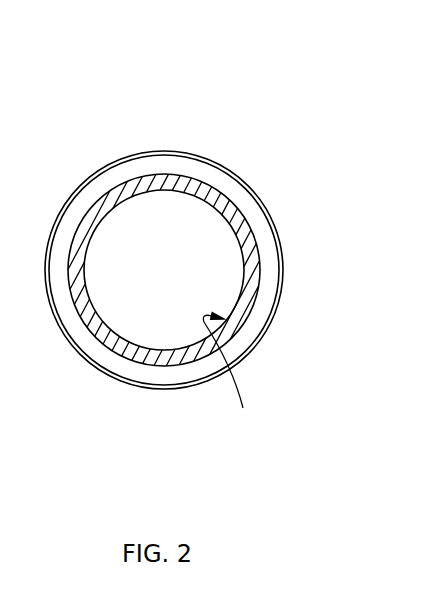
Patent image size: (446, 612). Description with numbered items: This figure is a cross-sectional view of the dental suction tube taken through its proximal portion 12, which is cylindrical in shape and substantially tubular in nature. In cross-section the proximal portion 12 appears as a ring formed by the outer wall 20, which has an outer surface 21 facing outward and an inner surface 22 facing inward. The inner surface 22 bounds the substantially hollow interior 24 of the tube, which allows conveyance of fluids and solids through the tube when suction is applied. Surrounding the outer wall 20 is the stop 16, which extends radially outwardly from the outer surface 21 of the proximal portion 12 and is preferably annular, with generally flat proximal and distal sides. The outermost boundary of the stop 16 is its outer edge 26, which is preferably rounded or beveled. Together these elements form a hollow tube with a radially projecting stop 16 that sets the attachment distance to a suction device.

The proximal portion 12 is at (231, 268).
The outer surface 21 is at (231, 250).
The outer edge 26 is at (270, 206).
The stop 16 is at (270, 252).
The outer wall 20 is at (250, 291).
The inner surface 22 is at (230, 376).
The hollow interior 24 is at (163, 273).